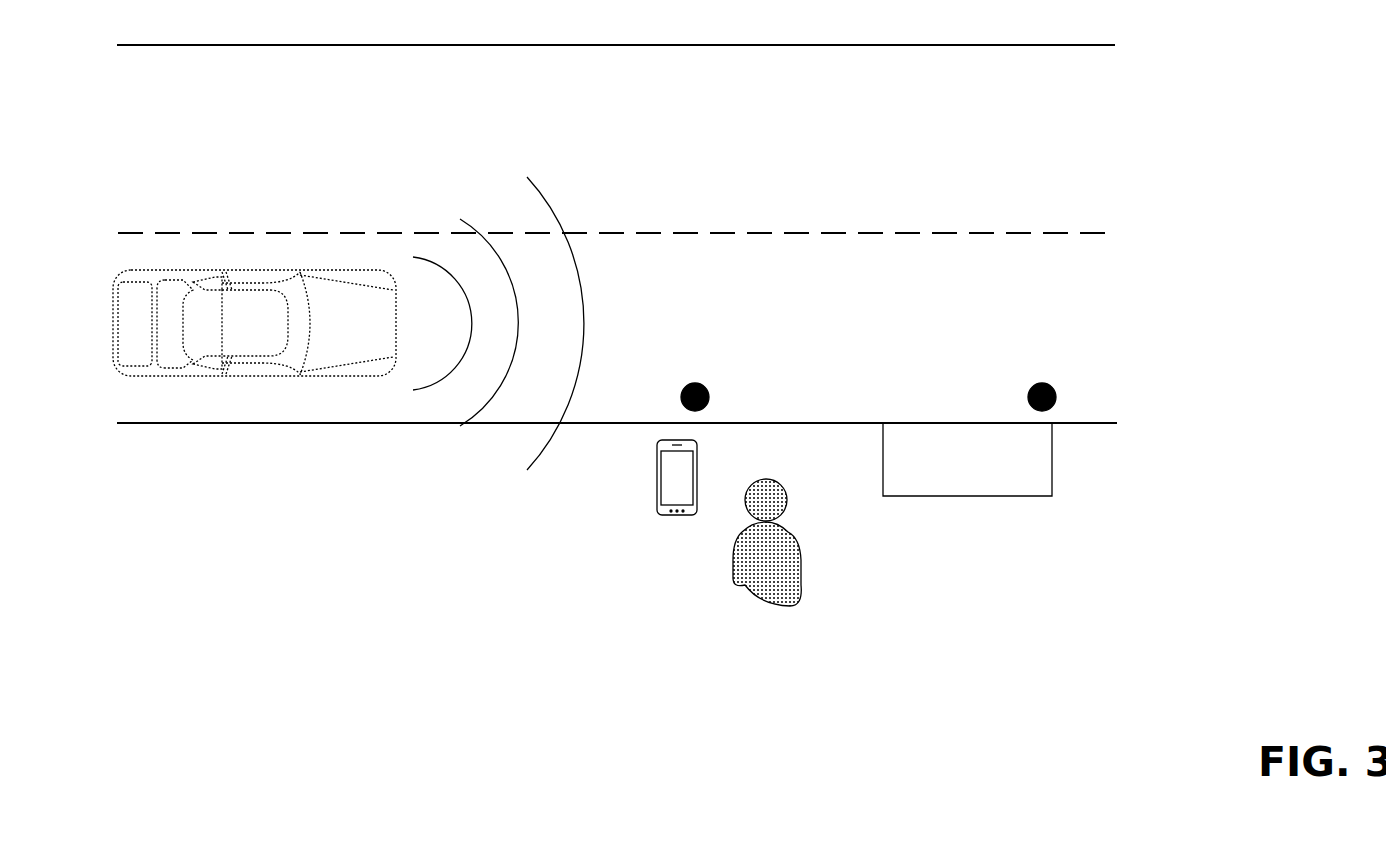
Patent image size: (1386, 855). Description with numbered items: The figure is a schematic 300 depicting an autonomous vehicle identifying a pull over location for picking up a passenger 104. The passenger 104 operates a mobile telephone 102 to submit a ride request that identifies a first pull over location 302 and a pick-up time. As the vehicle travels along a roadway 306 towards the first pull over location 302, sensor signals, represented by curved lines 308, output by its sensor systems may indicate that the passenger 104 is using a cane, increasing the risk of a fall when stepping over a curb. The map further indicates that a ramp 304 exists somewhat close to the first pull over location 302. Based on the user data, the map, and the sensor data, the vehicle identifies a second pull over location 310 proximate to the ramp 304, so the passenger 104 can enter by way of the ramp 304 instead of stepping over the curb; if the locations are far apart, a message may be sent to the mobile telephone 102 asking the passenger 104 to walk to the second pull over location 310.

The schematic 300 is at (1143, 120).
The first pull over location 302 is at (700, 384).
The ramp 304 is at (995, 497).
The roadway 306 is at (986, 105).
The curved lines 308 is at (603, 195).
The second pull over location 310 is at (1030, 384).
The mobile telephone 102 is at (657, 478).
The passenger 104 is at (792, 536).